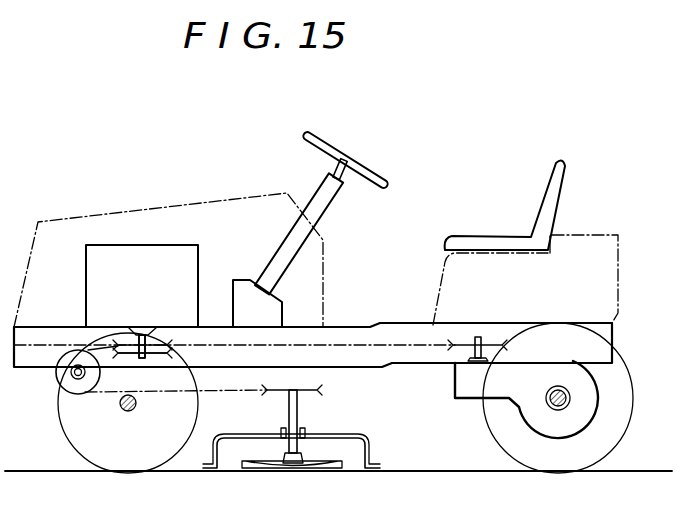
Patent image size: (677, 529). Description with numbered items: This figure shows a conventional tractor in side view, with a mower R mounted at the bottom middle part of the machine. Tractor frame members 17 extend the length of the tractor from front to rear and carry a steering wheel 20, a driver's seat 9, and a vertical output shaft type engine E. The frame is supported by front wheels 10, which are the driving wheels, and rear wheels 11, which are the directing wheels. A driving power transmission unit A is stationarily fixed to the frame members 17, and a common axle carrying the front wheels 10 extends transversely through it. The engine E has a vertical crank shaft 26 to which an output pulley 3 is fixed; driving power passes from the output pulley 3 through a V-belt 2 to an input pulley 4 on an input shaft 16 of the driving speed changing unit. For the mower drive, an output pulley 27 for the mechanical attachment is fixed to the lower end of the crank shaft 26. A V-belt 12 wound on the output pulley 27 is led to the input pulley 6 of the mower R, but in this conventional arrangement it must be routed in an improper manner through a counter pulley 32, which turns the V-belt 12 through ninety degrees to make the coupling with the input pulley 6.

The V-belt 2 is at (403, 342).
The output pulley 3 is at (155, 346).
The input pulley 4 is at (462, 338).
The input pulley 6 is at (312, 394).
The driver's seat 9 is at (540, 204).
The front wheels 10 is at (64, 437).
The rear wheels 11 is at (625, 433).
The V-belt 12 is at (243, 394).
The input shaft 16 is at (484, 338).
The tractor frame members 17 is at (343, 326).
The steering wheel 20 is at (392, 187).
The crank shaft 26 is at (142, 335).
The output pulley 27 is at (154, 358).
The counter pulley 32 is at (60, 378).
The engine E is at (147, 286).
The driving power transmission unit A is at (465, 400).
The mower R is at (368, 446).